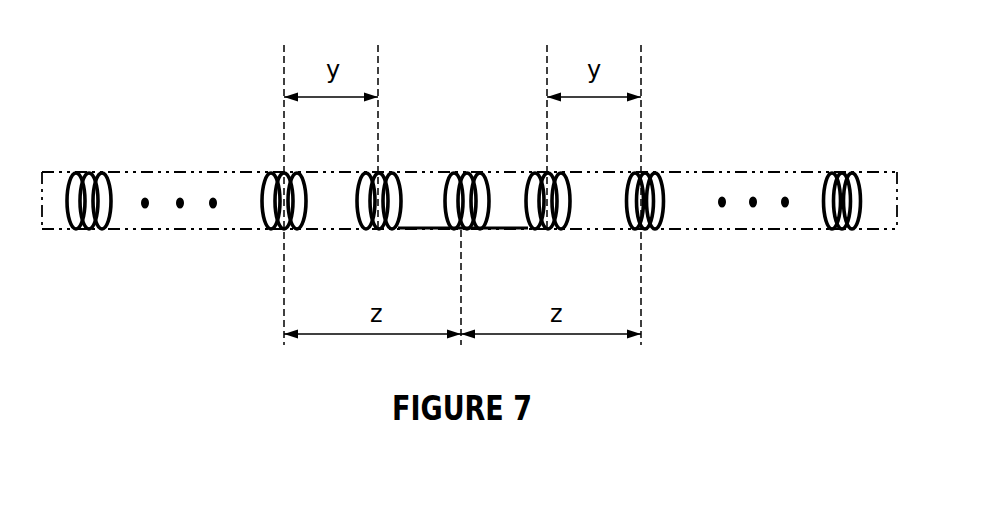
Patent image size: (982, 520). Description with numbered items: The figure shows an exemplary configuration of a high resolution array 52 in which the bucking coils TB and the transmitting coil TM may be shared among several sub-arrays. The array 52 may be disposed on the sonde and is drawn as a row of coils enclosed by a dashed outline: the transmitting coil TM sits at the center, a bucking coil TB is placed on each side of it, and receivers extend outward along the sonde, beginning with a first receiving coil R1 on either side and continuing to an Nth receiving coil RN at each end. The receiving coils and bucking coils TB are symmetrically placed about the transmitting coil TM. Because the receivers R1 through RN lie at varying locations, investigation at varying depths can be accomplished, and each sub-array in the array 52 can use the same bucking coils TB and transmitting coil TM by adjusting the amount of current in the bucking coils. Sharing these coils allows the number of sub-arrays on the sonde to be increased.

The high resolution array 52 is at (135, 110).
The receiving coil RN is at (464, 186).
The receiving coil R1 is at (461, 186).
The bucking coil TB is at (463, 186).
The transmitting coil TM is at (467, 186).